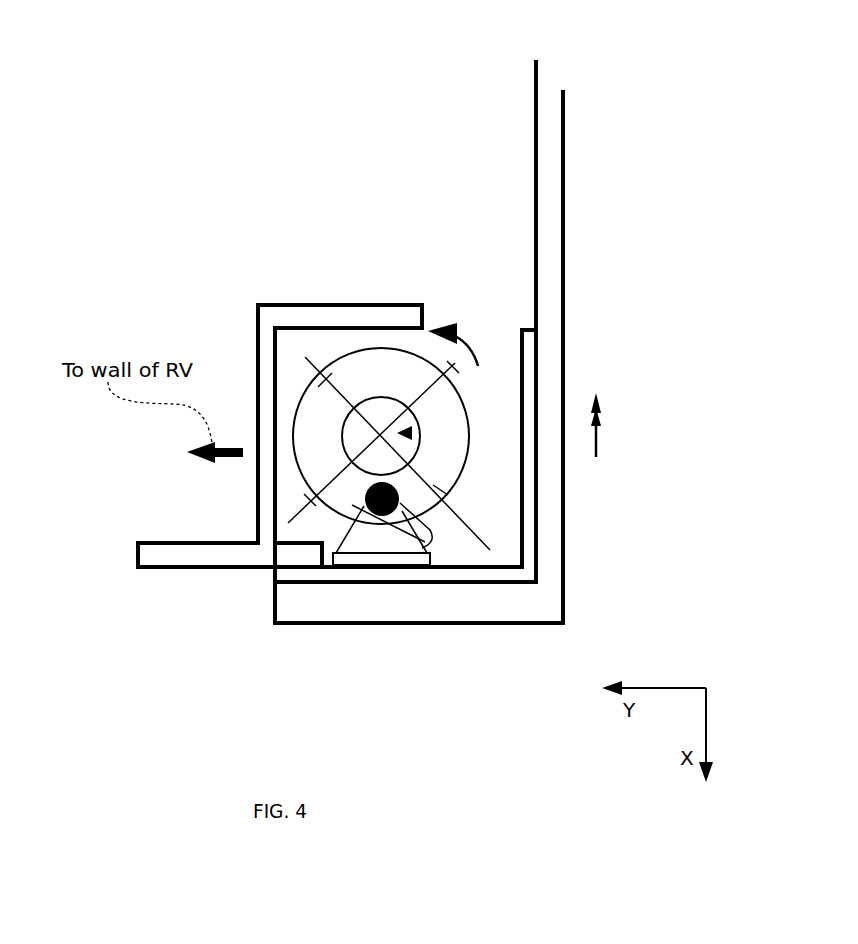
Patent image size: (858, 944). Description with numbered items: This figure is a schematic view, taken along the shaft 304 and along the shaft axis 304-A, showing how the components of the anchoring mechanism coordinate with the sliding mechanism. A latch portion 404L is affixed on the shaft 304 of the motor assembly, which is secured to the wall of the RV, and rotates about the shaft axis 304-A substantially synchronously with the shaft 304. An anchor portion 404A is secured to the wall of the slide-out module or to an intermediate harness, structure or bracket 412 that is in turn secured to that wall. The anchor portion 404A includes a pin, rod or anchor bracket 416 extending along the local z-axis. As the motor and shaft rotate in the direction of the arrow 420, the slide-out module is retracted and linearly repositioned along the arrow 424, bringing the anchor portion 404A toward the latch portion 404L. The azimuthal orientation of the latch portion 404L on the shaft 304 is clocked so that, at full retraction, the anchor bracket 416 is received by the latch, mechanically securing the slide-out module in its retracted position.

The shaft 304 is at (352, 430).
The shaft axis 304-A is at (412, 433).
The latch portion 404L is at (383, 370).
The anchor portion 404A is at (373, 543).
The intermediate harness/structure/bracket 412 is at (552, 293).
The pin or rod or anchor bracket 416 is at (413, 505).
The arrow 420 is at (445, 328).
The arrow 424 is at (597, 445).